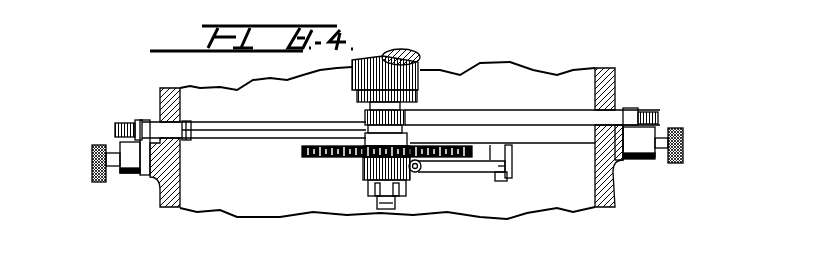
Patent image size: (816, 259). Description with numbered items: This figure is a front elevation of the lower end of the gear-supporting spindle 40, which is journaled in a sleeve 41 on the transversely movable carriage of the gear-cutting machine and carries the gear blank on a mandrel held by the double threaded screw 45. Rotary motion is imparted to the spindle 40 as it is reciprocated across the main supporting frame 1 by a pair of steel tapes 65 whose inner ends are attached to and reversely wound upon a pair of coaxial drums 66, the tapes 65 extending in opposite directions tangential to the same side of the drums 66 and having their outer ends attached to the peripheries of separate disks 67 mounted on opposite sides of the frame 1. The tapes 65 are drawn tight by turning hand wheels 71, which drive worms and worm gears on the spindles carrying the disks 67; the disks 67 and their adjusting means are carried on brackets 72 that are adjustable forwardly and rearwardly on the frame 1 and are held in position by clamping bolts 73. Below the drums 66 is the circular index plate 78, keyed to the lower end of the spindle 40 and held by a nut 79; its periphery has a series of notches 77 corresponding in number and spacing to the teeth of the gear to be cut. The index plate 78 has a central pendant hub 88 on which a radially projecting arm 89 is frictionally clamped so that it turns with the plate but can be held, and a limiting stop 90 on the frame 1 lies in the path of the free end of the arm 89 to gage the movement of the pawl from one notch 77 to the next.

The main supporting frame 1 is at (559, 212).
The rotary spindle 40 is at (400, 54).
The sleeve 41 is at (421, 58).
The double threaded screw 45 is at (378, 205).
The steel tapes 65 is at (259, 130).
The coaxial drums 66 is at (366, 125).
The disks 67 is at (118, 124).
The hand wheels 71 is at (92, 158).
The brackets 72 is at (152, 172).
The clamping bolts 73 is at (153, 120).
The notches 77 is at (372, 154).
The index plate 78 is at (317, 158).
The nut 79 is at (367, 184).
The central pendant hub 88 is at (408, 176).
The radially projecting arm 89 is at (477, 167).
The limiting stop 90 is at (512, 166).